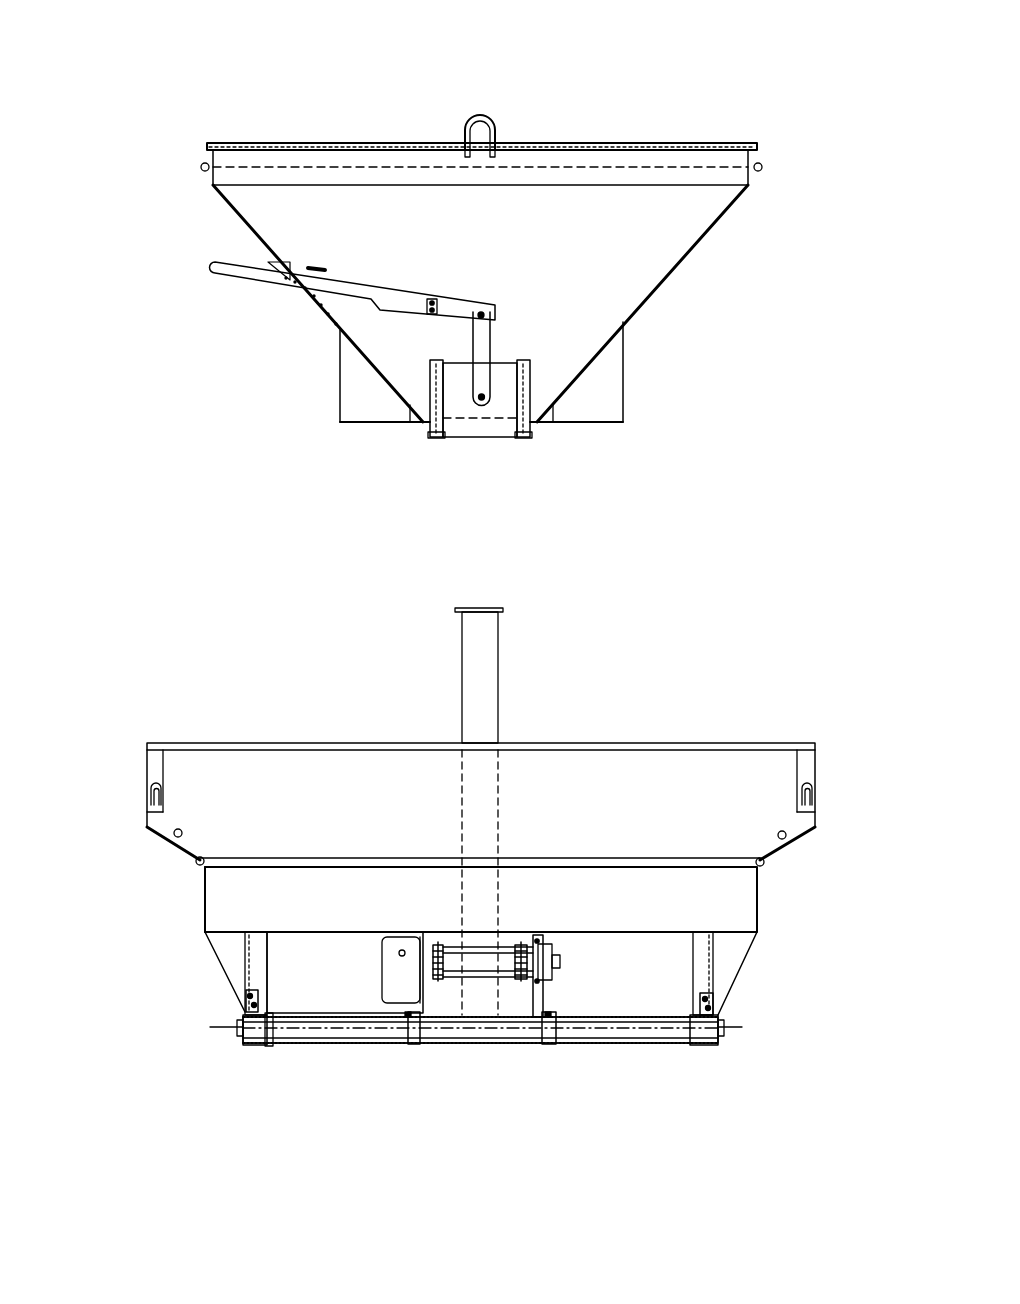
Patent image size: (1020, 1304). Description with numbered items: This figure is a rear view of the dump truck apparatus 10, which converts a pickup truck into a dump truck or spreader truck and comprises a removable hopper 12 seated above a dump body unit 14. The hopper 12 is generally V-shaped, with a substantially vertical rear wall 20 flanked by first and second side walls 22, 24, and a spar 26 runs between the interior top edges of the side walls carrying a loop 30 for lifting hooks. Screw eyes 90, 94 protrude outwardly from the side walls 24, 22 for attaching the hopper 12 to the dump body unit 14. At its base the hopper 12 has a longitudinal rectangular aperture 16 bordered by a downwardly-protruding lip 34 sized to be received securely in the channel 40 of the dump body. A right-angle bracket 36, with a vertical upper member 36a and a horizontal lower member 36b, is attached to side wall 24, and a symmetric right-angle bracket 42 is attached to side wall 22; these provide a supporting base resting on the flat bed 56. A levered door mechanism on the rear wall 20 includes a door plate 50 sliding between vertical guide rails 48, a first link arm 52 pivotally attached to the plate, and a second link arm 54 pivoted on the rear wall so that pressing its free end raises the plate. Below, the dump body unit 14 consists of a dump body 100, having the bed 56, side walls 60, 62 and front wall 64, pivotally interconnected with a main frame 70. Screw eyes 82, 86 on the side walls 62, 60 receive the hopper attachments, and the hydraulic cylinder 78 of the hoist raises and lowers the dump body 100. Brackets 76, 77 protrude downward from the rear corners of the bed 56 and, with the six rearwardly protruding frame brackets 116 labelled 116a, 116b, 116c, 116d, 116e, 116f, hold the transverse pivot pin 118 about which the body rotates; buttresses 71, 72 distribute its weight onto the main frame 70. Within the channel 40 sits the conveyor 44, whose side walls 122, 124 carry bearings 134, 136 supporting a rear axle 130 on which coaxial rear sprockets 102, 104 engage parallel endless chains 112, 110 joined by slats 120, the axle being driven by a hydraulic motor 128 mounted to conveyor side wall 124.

The dump truck apparatus 10 is at (758, 613).
The hopper 12 is at (848, 357).
The dump body unit 14 is at (214, 681).
The longitudinal rectangular aperture 16 is at (483, 462).
The rear wall 20 is at (514, 228).
The first side wall 22 is at (236, 210).
The second side wall 24 is at (682, 262).
The spar 26 is at (585, 148).
The loop 30 is at (470, 116).
The downwardly-protruding lip 34 is at (472, 430).
The right-angle bracket 36 is at (624, 422).
The upper member 36a is at (624, 376).
The lower member 36b is at (598, 430).
The longitudinal channel 40 is at (487, 924).
The right-angle bracket 42 is at (322, 422).
The conveyor 44 is at (500, 1068).
The vertical guide rails 48 is at (430, 372).
The door plate 50 is at (463, 371).
The first link arm 52 is at (491, 345).
The second link arm 54 is at (401, 298).
The bed 56 is at (651, 922).
The side wall 60 is at (760, 891).
The side wall 62 is at (204, 889).
The front wall 64 is at (595, 741).
The main frame 70 is at (636, 1044).
The buttress 71 is at (214, 960).
The buttress 72 is at (746, 966).
The bracket 76 is at (700, 981).
The bracket 77 is at (246, 986).
The hydraulic cylinder 78 is at (500, 666).
The screw eye 82 is at (181, 829).
The screw eye 86 is at (779, 831).
The screw eye 90 is at (764, 166).
The screw eye 94 is at (200, 168).
The dump body 100 is at (152, 912).
The rear sprocket 102 is at (521, 980).
The rear sprocket 104 is at (439, 980).
The endless chain 110 is at (520, 941).
The endless chain 112 is at (434, 950).
The brackets 116 is at (736, 1050).
The bracket 116a is at (721, 1015).
The bracket 116b is at (693, 1046).
The bracket 116c is at (553, 1045).
The bracket 116d is at (406, 1045).
The bracket 116e is at (273, 1045).
The bracket 116f is at (241, 1046).
The pivot pin 118 is at (591, 1044).
The slats 120 is at (488, 975).
The conveyor side wall 122 is at (536, 997).
The conveyor side wall 124 is at (426, 935).
The hydraulic motor 128 is at (382, 963).
The rear axle 130 is at (560, 965).
The bearing 134 is at (546, 946).
The bearing 136 is at (416, 959).